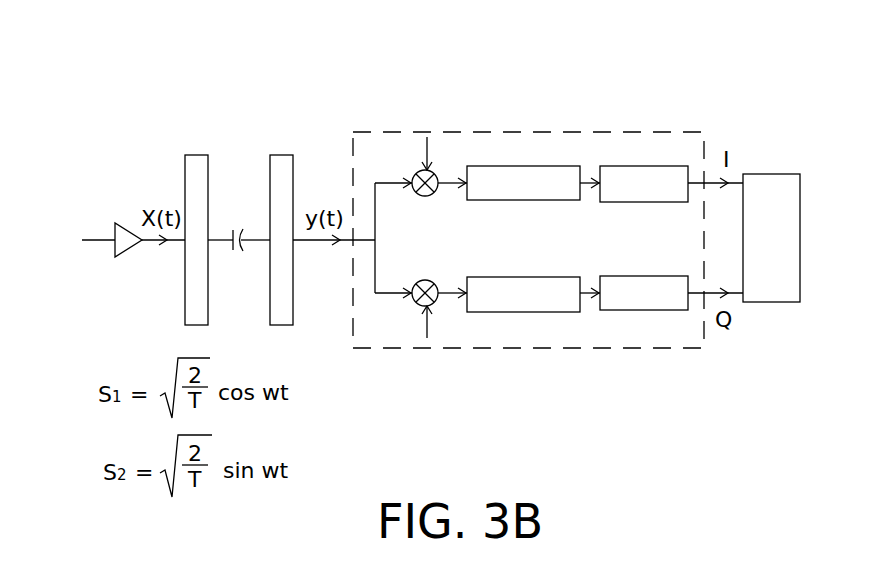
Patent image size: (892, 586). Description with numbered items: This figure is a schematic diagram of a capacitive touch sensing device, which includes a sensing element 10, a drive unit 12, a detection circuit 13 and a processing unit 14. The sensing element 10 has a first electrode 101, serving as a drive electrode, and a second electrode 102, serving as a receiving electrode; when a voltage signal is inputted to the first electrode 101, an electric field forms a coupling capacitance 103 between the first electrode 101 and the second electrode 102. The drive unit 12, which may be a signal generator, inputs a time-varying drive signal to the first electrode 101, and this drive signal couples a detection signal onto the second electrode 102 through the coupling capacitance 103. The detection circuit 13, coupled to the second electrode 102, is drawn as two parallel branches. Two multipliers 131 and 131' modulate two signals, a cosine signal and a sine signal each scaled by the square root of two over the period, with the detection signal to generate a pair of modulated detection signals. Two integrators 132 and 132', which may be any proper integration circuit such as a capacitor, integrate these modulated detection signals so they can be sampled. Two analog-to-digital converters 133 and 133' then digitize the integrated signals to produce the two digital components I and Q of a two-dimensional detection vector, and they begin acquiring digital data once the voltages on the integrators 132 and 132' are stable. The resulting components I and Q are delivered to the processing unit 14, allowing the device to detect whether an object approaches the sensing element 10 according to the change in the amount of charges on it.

The sensing element 10 is at (295, 80).
The first electrode 101 is at (194, 155).
The second electrode 102 is at (278, 155).
The coupling capacitance 103 is at (235, 255).
The drive unit 12 is at (123, 228).
The detection circuit 13 is at (597, 130).
The multiplier 131 is at (437, 153).
The integrator 132 is at (523, 137).
The analog-to-digital converter 133 is at (644, 137).
The multiplier 131' is at (440, 327).
The integrator 132' is at (523, 337).
The analog-to-digital converter 133' is at (644, 337).
The processing unit 14 is at (753, 173).